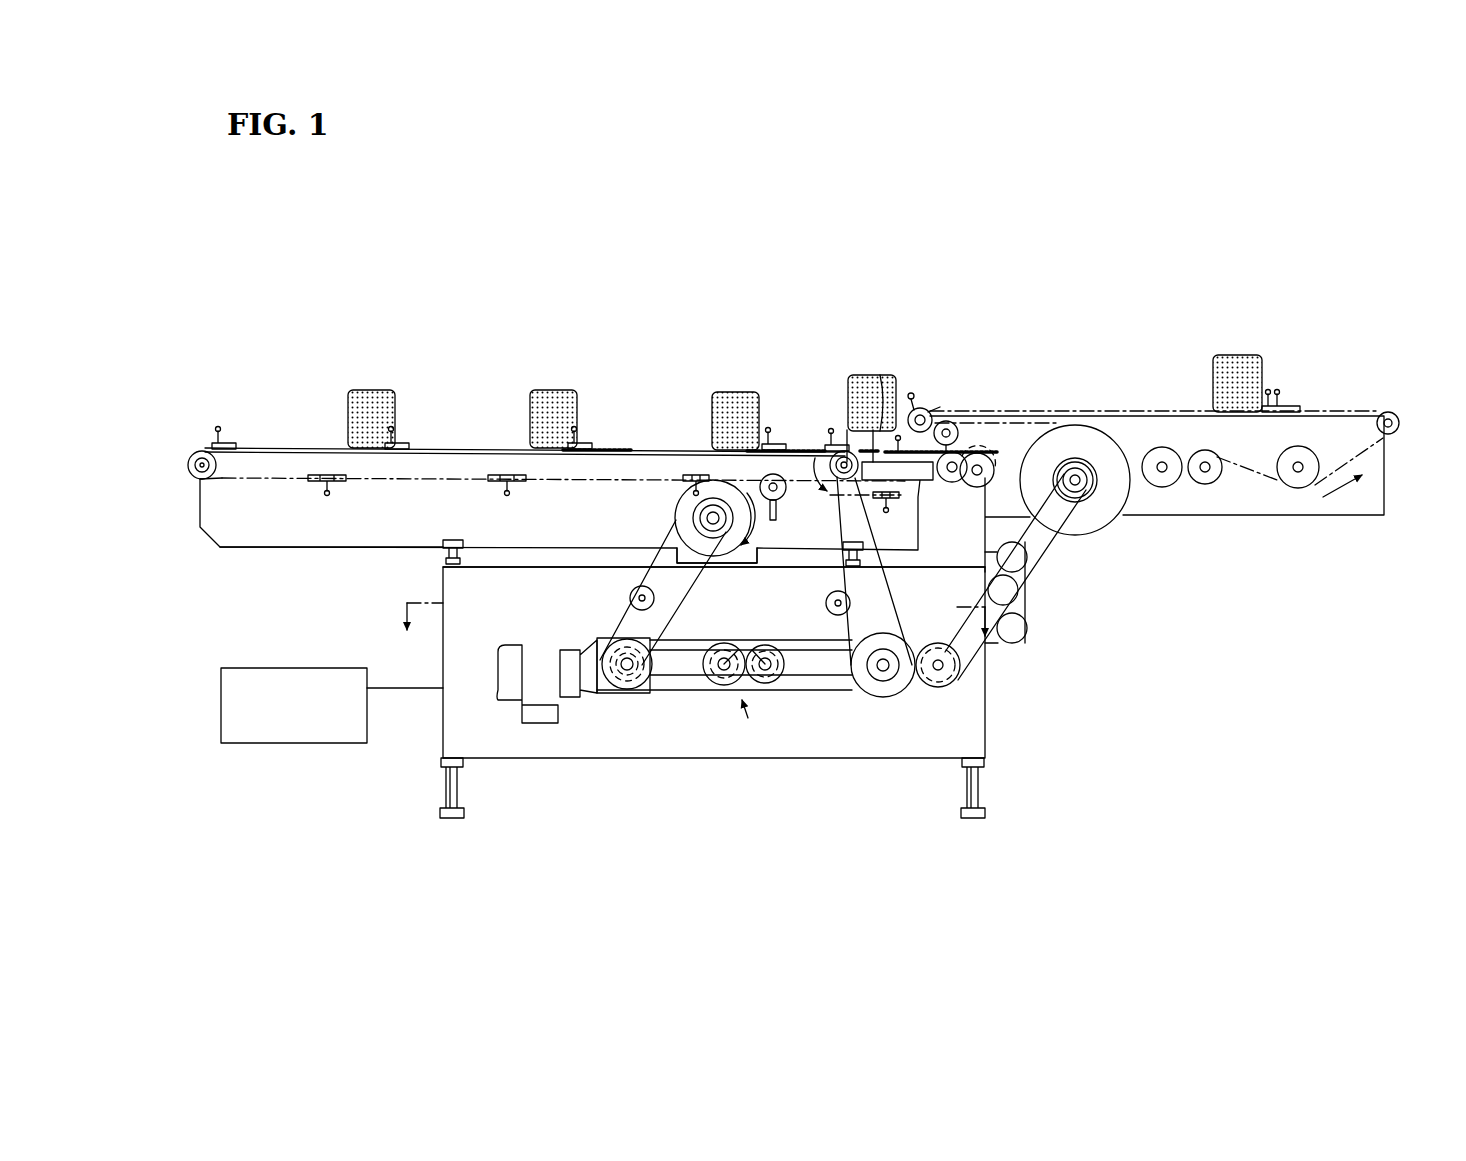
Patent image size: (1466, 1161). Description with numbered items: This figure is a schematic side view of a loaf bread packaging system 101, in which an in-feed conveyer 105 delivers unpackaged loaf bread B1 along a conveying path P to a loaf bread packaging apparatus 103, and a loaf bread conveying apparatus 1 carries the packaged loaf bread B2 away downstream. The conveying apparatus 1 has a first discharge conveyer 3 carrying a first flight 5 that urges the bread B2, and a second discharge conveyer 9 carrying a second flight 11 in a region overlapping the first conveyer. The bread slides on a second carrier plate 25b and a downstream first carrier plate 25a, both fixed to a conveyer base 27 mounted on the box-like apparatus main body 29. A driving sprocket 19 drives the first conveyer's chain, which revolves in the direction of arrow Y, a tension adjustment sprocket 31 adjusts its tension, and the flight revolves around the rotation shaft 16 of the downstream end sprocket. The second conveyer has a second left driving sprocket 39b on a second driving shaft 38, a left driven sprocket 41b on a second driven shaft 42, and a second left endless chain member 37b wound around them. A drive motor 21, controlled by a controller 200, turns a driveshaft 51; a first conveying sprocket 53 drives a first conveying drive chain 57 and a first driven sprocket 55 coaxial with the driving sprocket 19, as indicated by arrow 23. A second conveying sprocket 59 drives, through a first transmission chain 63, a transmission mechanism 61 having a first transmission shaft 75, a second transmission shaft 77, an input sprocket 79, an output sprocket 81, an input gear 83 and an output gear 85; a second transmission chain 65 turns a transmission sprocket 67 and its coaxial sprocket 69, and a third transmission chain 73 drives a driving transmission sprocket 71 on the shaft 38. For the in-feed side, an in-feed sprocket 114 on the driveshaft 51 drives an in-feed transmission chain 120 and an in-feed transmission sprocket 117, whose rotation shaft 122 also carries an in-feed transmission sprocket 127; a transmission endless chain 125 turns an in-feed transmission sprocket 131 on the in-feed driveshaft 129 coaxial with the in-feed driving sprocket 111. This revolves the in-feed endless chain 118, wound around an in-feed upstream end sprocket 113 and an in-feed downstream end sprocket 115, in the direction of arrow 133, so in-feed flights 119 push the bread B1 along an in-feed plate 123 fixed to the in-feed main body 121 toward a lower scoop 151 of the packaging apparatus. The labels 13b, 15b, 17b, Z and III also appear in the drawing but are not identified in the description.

The loaf bread conveying apparatus 1 is at (515, 292).
The first discharge conveyer 3 is at (487, 440).
The first flight 5 is at (222, 440).
The second discharge conveyer 9 is at (925, 500).
The second flight 11 is at (940, 422).
The guide roller 13b is at (1013, 420).
The drive pulley 15b is at (200, 480).
The rotation shaft 16 is at (204, 450).
The return belt path 17b is at (230, 482).
The driving sprocket 19 is at (683, 500).
The drive motor 21 is at (538, 690).
The arrow 23 is at (745, 560).
The first carrier plate 25a is at (290, 448).
The second carrier plate 25b is at (885, 445).
The conveyer base 27 is at (283, 548).
The apparatus main body 29 is at (503, 750).
The tension adjustment sprocket 31 is at (700, 483).
The second left endless chain member 37b is at (953, 452).
The second driving shaft 38 is at (832, 455).
The second left driving sprocket 39b is at (773, 474).
The left driven sprocket 41b is at (983, 420).
The second driven shaft 42 is at (955, 483).
The driveshaft 51 is at (625, 672).
The first conveying sprocket 53 is at (665, 675).
The first driven sprocket 55 is at (680, 538).
The first conveying drive chain 57 is at (622, 613).
The second conveying sprocket 59 is at (593, 660).
The transmission mechanism 61 is at (748, 720).
The first transmission chain 63 is at (677, 693).
The second transmission chain 65 is at (835, 693).
The transmission sprocket 67 is at (880, 680).
The coaxial sprocket 69 is at (905, 690).
The driving transmission sprocket 71 is at (833, 480).
The third transmission chain 73 is at (895, 590).
The first transmission shaft 75 is at (718, 686).
The second transmission shaft 77 is at (766, 684).
The input sprocket 79 is at (723, 693).
The output sprocket 81 is at (838, 692).
The input gear 83 is at (712, 682).
The output gear 85 is at (783, 693).
The loaf bread packaging system 101 is at (966, 232).
The loaf bread packaging apparatus 103 is at (863, 363).
The in-feed conveyer 105 is at (1282, 245).
The in-feed driving sprocket 111 is at (1115, 497).
The in-feed upstream end sprocket 113 is at (1392, 412).
The in-feed sprocket 114 is at (583, 700).
The in-feed downstream end sprocket 115 is at (975, 452).
The in-feed transmission sprocket 117 is at (937, 672).
The in-feed endless chain 118 is at (1385, 463).
The in-feed flight 119 is at (922, 410).
The in-feed transmission chain 120 is at (813, 692).
The in-feed main body 121 is at (1268, 516).
The rotation shaft 122 is at (988, 720).
The in-feed plate 123 is at (1180, 400).
The transmission endless chain 125 is at (1040, 600).
The in-feed transmission sprocket 127 is at (968, 676).
The in-feed driveshaft 129 is at (1092, 500).
The in-feed transmission sprocket 131 is at (1083, 495).
The arrow 133 is at (1340, 500).
The lower scoop 151 is at (847, 448).
The controller 200 is at (292, 744).
The loaf bread B1 is at (882, 373).
The packaged loaf bread B2 is at (373, 390).
The conveying path P is at (623, 420).
The arrow Y is at (158, 455).
The direction Z is at (817, 487).
The section line III is at (692, 632).